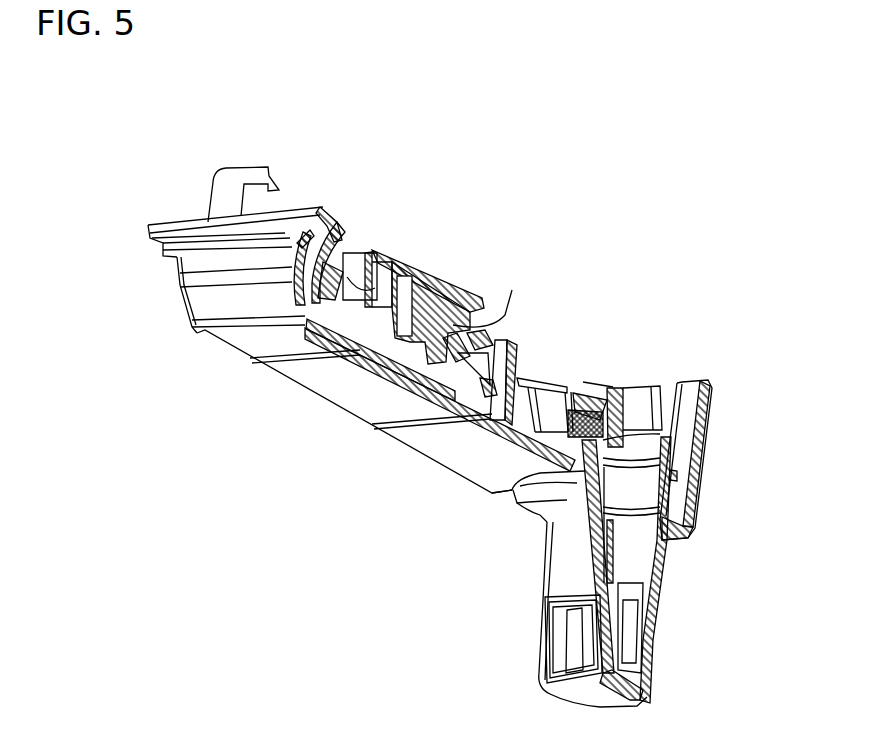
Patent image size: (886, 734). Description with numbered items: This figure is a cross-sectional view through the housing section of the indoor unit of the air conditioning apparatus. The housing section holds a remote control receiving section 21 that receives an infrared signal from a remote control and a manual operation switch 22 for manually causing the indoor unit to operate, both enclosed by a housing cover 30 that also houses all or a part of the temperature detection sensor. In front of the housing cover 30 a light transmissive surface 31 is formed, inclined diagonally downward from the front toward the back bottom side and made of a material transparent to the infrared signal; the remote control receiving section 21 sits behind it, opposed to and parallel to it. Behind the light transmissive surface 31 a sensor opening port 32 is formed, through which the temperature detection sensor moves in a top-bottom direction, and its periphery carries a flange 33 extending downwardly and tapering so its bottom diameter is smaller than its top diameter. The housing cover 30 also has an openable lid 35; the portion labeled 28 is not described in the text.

The remote control receiving section 21 is at (380, 255).
The manual operation switch 22 is at (453, 325).
The cavity frame 28 is at (557, 588).
The housing cover 30 is at (148, 230).
The light transmissive surface 31 is at (197, 303).
The sensor opening port 32 is at (540, 522).
The flange 33 is at (537, 493).
The openable lid 35 is at (347, 392).